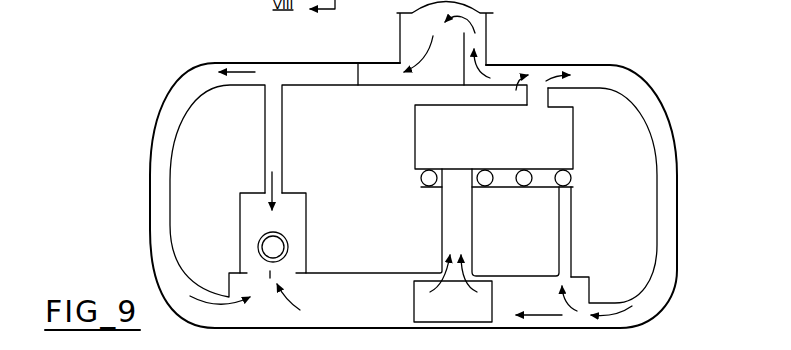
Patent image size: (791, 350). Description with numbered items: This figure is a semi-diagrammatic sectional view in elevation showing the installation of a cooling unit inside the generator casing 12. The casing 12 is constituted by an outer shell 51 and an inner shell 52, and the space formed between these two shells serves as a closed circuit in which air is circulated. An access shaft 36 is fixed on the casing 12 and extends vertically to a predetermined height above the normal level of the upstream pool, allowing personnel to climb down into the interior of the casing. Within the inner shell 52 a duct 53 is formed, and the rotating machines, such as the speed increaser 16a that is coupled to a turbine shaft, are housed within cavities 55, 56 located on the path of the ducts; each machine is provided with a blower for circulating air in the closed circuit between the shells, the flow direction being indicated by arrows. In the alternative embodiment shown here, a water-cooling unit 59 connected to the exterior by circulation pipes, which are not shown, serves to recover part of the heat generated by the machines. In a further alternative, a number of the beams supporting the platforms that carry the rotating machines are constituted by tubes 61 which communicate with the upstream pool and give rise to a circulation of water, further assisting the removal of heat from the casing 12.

The casing 12 is at (176, 71).
The access shaft 36 is at (491, 45).
The outer shell 51 is at (678, 220).
The inner shell 52 is at (648, 244).
The duct 53 is at (282, 140).
The cavity 55 is at (296, 218).
The cavity 56 is at (563, 147).
The water-cooling unit 59 is at (414, 300).
The tubes 61 is at (523, 188).
The speed increaser 16a is at (258, 250).